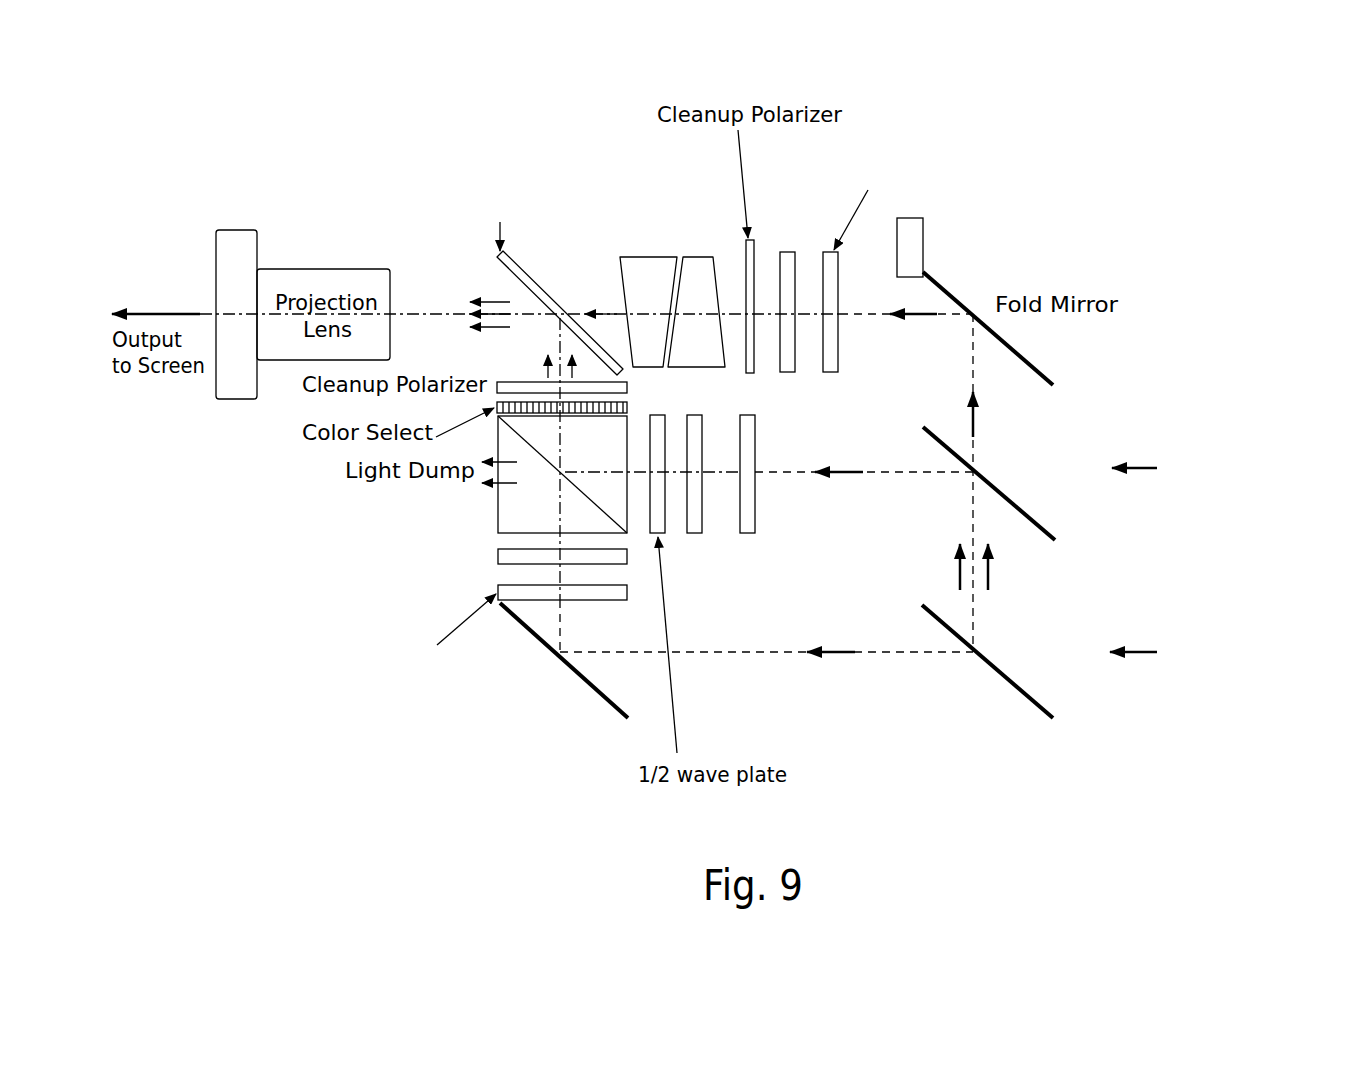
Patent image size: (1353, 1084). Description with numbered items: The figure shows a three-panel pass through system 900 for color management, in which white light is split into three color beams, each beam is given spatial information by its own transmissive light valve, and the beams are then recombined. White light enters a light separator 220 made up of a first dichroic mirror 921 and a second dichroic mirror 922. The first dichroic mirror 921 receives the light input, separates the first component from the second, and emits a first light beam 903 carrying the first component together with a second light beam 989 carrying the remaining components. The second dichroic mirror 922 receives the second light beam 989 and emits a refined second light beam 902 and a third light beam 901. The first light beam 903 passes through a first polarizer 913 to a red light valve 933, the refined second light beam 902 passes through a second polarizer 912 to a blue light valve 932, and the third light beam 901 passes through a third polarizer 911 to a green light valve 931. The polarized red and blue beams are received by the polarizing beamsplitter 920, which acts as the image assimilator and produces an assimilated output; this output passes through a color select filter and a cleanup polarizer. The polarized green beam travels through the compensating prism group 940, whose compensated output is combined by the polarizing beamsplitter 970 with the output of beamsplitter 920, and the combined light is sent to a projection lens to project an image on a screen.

The pass through system 900 is at (1122, 157).
The polarizing beamsplitter 970 is at (482, 170).
The compensating prism group 940 is at (660, 202).
The green transmissive light valve 931 is at (797, 260).
The blue transmissive light valve 932 is at (702, 421).
The red transmissive light valve 933 is at (497, 560).
The third polarizer 911 is at (832, 374).
The second polarizer 912 is at (754, 540).
The first polarizer 913 is at (588, 603).
The polarizing beamsplitter 920 is at (566, 484).
The third light beam 901 is at (918, 317).
The refined second light beam 902 is at (838, 474).
The first light beam 903 is at (828, 655).
The first dichroic mirror 921 is at (1013, 680).
The second dichroic mirror 922 is at (1035, 517).
The second light beam 989 is at (990, 572).
The light separator 220 is at (1253, 468).